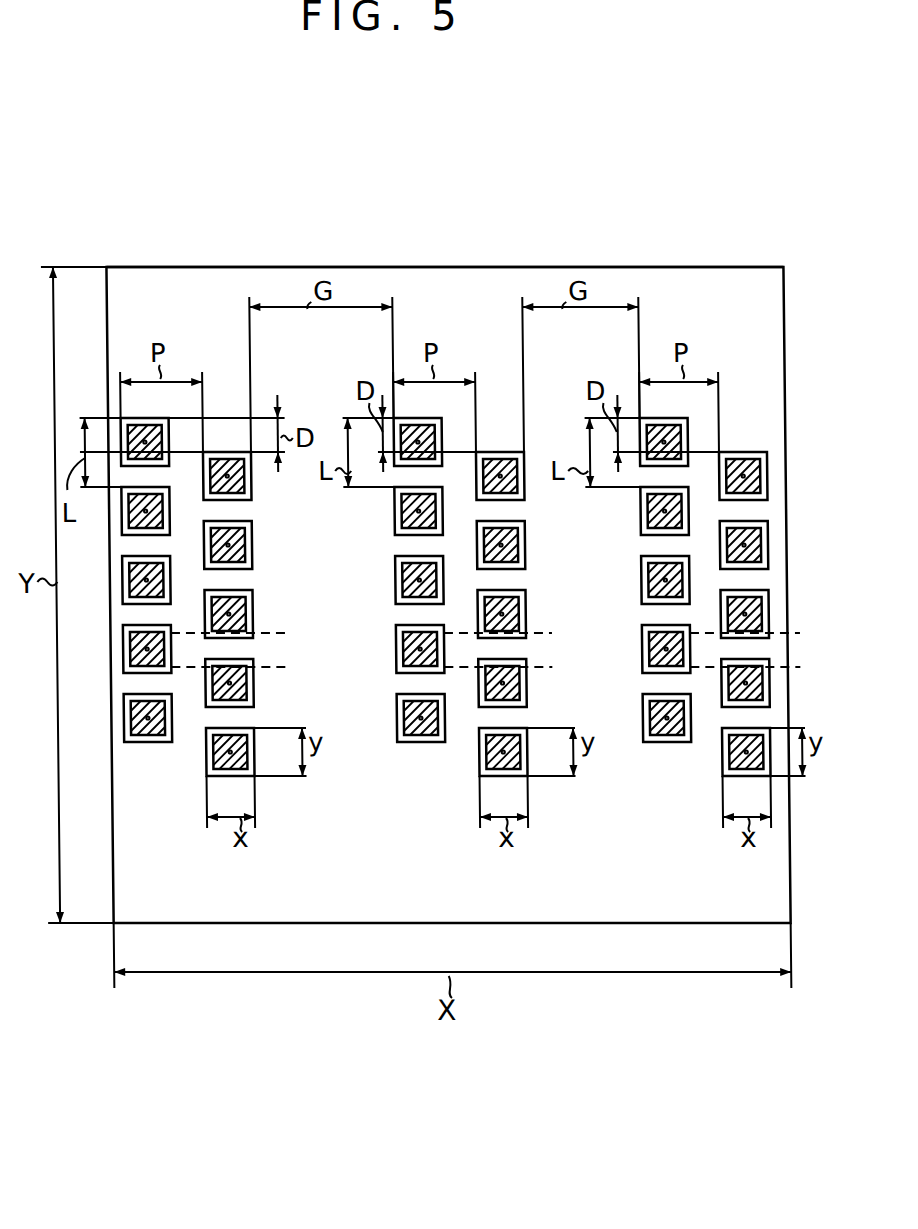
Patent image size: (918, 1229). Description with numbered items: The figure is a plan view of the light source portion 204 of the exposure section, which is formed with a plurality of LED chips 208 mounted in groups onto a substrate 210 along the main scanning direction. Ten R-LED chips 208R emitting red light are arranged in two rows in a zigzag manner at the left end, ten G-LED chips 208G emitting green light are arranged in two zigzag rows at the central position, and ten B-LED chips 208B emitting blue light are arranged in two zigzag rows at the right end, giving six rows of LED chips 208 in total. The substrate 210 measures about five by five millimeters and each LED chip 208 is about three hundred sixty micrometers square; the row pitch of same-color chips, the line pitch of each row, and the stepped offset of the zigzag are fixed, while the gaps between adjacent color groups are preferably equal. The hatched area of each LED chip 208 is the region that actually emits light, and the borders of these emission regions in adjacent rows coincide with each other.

The light source portion 204 is at (218, 240).
The substrate 210 is at (532, 283).
The LED chips 208 is at (446, 666).
The R-LED chip 208R is at (246, 568).
The G-LED chip 208G is at (389, 672).
The B-LED chip 208B is at (667, 641).